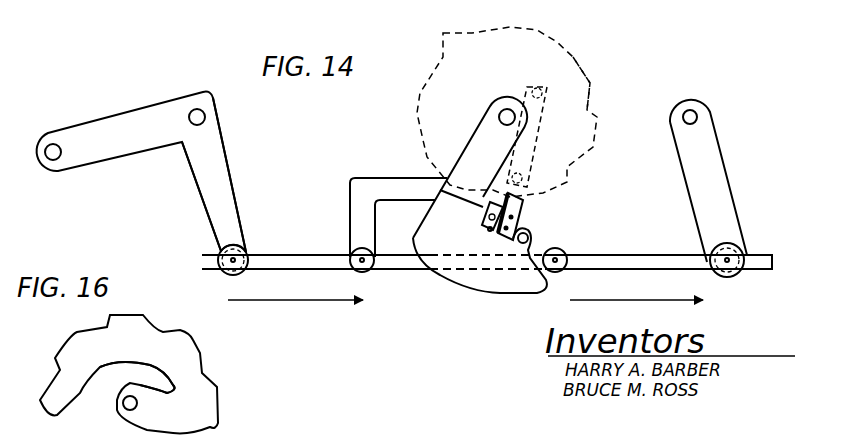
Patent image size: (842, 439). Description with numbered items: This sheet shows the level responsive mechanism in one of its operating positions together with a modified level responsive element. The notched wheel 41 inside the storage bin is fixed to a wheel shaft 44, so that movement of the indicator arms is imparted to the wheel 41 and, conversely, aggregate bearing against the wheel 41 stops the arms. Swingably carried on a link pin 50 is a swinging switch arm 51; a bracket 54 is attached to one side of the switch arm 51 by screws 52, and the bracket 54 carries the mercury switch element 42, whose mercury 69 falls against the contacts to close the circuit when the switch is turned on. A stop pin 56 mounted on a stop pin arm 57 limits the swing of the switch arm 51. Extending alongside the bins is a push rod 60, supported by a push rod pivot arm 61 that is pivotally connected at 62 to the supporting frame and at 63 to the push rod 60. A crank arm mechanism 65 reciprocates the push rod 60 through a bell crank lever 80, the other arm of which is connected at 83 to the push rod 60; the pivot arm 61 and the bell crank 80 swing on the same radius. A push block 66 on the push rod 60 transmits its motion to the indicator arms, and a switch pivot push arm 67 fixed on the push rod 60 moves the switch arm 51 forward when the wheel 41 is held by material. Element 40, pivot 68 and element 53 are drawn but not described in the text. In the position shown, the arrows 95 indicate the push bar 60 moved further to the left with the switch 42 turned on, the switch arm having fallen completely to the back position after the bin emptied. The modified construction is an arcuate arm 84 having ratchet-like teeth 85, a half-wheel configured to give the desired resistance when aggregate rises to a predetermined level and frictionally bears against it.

In FIG. 14, the cam 40 is at (590, 22).
In FIG. 14, the notched wheel 41 is at (573, 77).
In FIG. 14, the mercury switch element 42 is at (504, 195).
In FIG. 16, the wheel shaft 44 is at (118, 403).
In FIG. 14, the link pin 50 is at (480, 260).
In FIG. 14, the swinging switch arm 51 is at (440, 190).
In FIG. 14, the screws 52 is at (506, 243).
In FIG. 14, the clamp block 53 is at (482, 222).
In FIG. 14, the bracket 54 is at (526, 211).
In FIG. 14, the stop pin 56 is at (527, 175).
In FIG. 14, the stop pin arm 57 is at (527, 147).
In FIG. 14, the push rod 60 is at (621, 261).
In FIG. 14, the push rod pivot arm 61 is at (715, 178).
In FIG. 14, the pivotal connection to supporting frame 62 is at (696, 116).
In FIG. 14, the pivotal connection to push rod 63 is at (731, 258).
In FIG. 14, the crank arm mechanism 65 is at (134, 86).
In FIG. 14, the push block 66 is at (558, 258).
In FIG. 14, the switch pivot push arm 67 is at (352, 217).
In FIG. 14, the pivot pin 68 is at (366, 258).
In FIG. 14, the mercury 69 is at (489, 230).
In FIG. 14, the bell crank lever 80 is at (223, 185).
In FIG. 14, the connection of bell crank to push rod 83 is at (237, 258).
In FIG. 16, the arcuate arm 84 is at (185, 375).
In FIG. 16, the ratchet-like teeth 85 is at (183, 350).
In FIG. 14, the arrows 95 is at (328, 285).